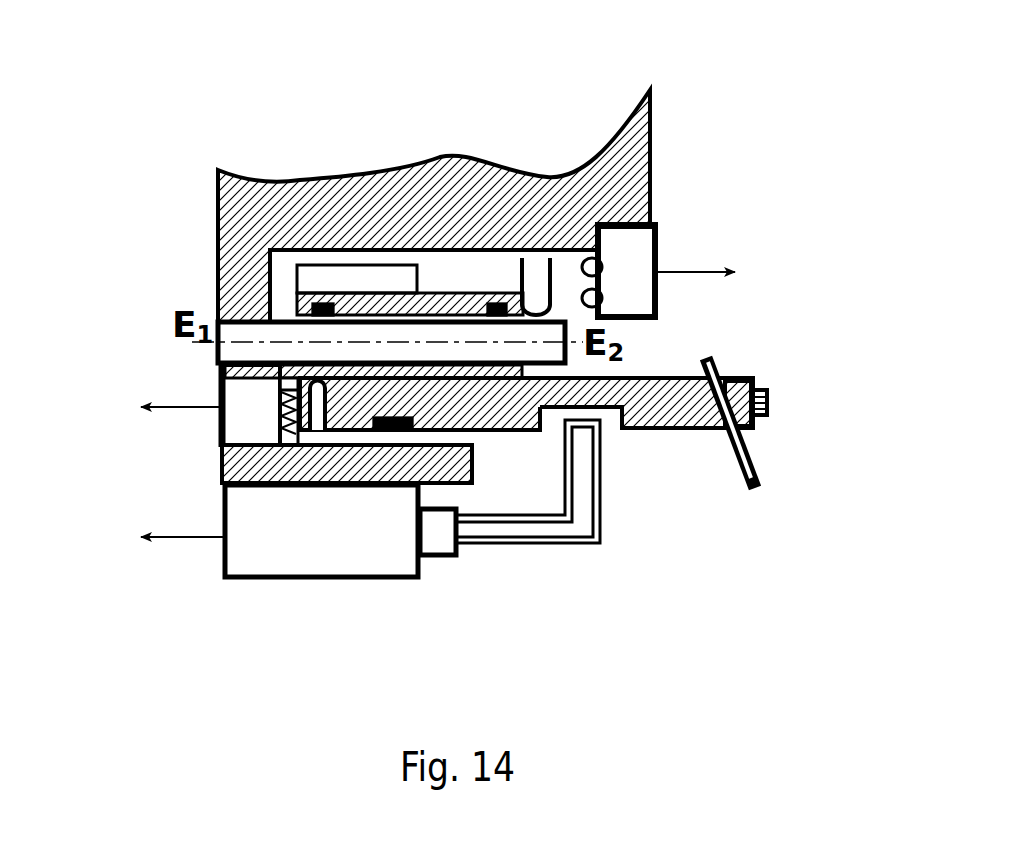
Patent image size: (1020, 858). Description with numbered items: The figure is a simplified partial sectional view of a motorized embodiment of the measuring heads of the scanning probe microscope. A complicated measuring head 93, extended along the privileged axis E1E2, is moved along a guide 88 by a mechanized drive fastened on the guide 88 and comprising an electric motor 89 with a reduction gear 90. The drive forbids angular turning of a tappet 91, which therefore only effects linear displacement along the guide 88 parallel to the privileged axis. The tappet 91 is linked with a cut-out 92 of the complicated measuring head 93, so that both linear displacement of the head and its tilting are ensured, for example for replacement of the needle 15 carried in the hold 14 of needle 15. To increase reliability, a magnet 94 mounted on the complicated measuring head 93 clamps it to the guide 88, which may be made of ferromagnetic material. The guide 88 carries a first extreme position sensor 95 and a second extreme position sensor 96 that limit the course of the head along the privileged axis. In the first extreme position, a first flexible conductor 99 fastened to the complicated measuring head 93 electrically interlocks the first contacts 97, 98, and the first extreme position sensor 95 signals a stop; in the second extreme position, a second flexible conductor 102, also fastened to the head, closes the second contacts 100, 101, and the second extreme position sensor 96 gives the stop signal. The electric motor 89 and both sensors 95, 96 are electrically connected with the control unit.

The hold of needle 14 is at (771, 404).
The needle 15 is at (758, 459).
The guide 88 is at (413, 207).
The electric motor 89 is at (282, 550).
The reduction gear 90 is at (435, 530).
The tappet 91 is at (580, 527).
The cut-out 92 is at (626, 438).
The complicated measuring head 93 is at (488, 398).
The magnet 94 is at (382, 433).
The first extreme position sensor 95 is at (628, 265).
The second extreme position sensor 96 is at (238, 418).
The first contact 97 is at (600, 232).
The first contact 98 is at (605, 302).
The first flexible conductor 99 is at (523, 282).
The second contact 100 is at (288, 387).
The second contact 101 is at (282, 418).
The second flexible conductor 102 is at (290, 365).